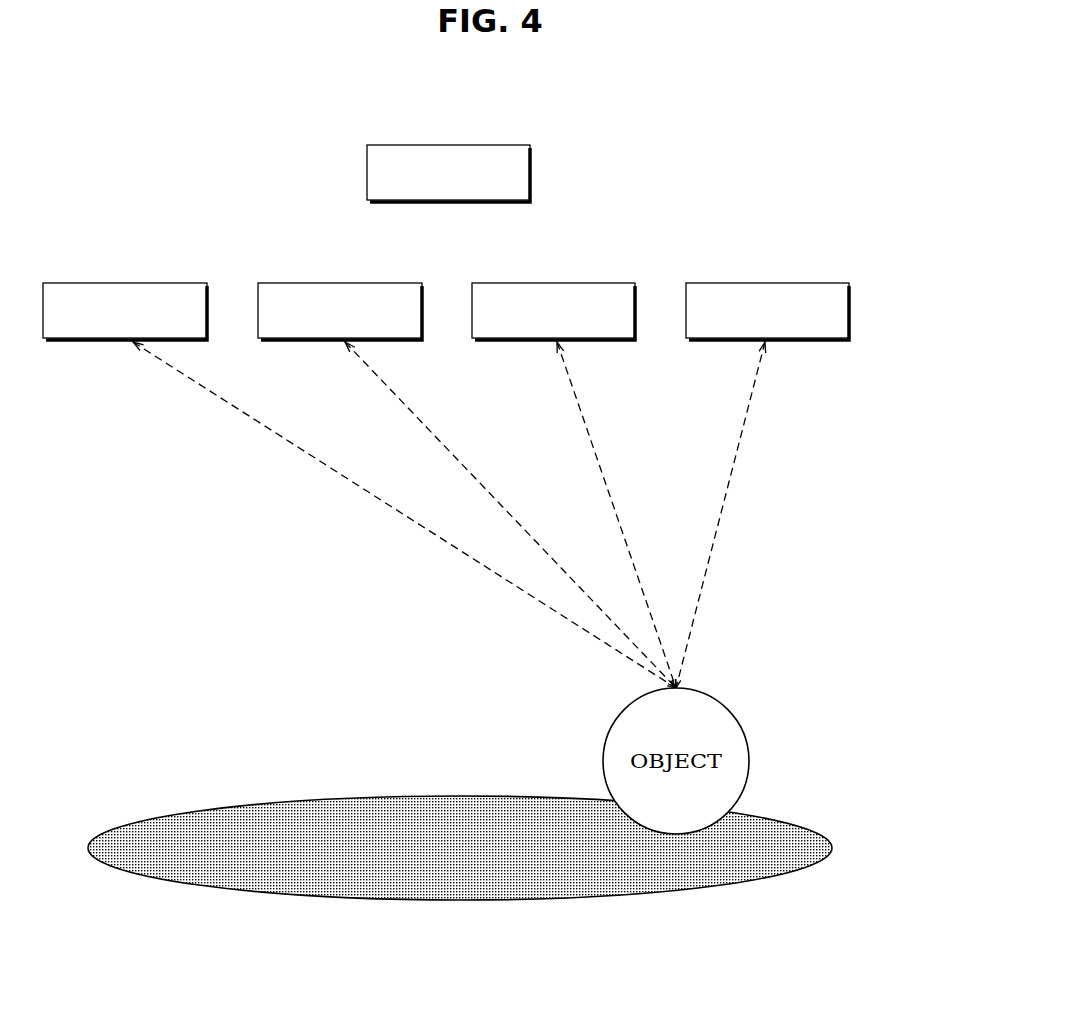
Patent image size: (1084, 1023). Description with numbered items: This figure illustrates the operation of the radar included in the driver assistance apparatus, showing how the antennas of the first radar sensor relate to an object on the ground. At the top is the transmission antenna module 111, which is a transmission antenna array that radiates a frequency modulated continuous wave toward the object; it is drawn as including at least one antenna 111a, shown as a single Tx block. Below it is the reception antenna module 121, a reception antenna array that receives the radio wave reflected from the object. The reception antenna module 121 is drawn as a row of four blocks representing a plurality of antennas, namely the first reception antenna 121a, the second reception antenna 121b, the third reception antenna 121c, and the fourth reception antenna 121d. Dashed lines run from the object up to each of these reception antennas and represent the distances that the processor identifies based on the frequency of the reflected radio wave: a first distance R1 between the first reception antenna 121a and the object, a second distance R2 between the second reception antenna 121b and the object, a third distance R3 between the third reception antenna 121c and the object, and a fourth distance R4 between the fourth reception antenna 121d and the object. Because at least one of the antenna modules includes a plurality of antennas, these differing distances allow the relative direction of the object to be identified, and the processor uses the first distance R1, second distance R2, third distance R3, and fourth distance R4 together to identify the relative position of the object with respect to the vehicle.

The transmission antenna module 111 is at (560, 140).
The antenna 111a is at (508, 143).
The reception antenna module 121 is at (878, 265).
The first reception antenna 121a is at (184, 283).
The second reception antenna 121b is at (397, 283).
The third reception antenna 121c is at (608, 283).
The fourth reception antenna 121d is at (823, 283).
The first distance R1 is at (404, 515).
The second distance R2 is at (510, 515).
The third distance R3 is at (616, 515).
The fourth distance R4 is at (728, 515).